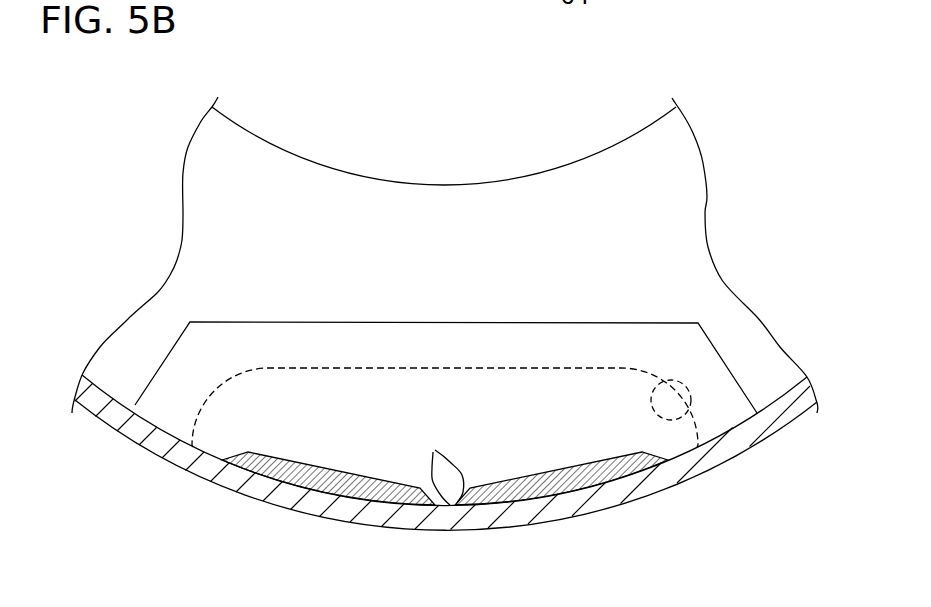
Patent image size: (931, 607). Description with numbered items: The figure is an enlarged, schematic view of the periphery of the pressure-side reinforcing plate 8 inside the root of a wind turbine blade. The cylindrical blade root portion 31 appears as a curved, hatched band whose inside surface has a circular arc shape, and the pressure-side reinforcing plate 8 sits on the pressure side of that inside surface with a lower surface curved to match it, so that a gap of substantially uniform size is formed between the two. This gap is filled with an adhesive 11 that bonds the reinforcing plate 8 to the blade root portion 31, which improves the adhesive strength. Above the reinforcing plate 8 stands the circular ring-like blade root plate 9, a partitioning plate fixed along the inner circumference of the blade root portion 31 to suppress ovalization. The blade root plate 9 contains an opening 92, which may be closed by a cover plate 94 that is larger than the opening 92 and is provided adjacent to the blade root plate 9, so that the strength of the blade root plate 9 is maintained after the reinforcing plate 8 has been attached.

The pressure-side reinforcing plate 8 is at (355, 488).
The blade root plate 9 is at (684, 215).
The adhesive 11 is at (440, 465).
The blade root portion 31 is at (700, 467).
The opening 92 is at (688, 390).
The cover plate 94 is at (653, 340).